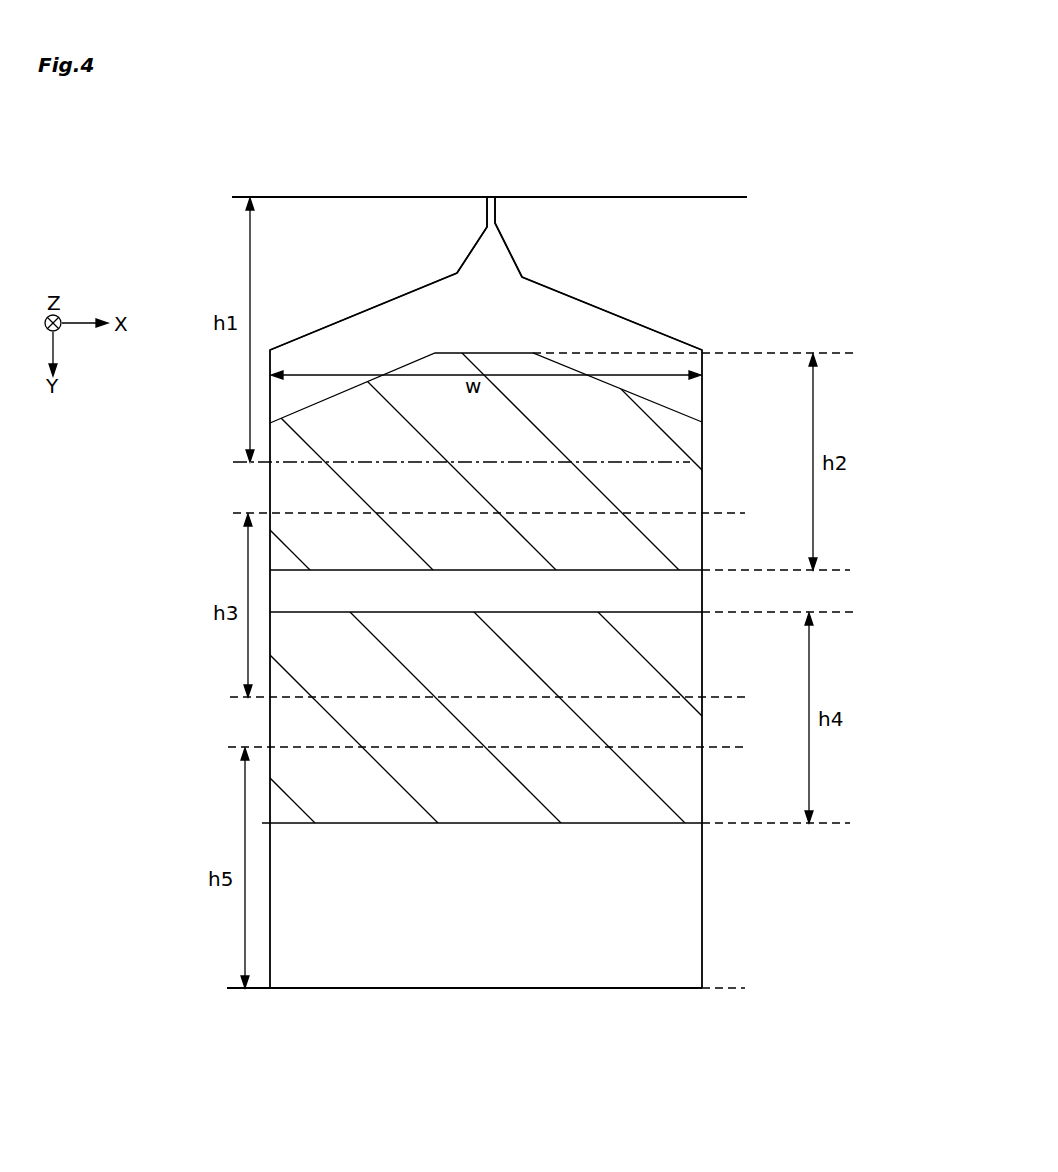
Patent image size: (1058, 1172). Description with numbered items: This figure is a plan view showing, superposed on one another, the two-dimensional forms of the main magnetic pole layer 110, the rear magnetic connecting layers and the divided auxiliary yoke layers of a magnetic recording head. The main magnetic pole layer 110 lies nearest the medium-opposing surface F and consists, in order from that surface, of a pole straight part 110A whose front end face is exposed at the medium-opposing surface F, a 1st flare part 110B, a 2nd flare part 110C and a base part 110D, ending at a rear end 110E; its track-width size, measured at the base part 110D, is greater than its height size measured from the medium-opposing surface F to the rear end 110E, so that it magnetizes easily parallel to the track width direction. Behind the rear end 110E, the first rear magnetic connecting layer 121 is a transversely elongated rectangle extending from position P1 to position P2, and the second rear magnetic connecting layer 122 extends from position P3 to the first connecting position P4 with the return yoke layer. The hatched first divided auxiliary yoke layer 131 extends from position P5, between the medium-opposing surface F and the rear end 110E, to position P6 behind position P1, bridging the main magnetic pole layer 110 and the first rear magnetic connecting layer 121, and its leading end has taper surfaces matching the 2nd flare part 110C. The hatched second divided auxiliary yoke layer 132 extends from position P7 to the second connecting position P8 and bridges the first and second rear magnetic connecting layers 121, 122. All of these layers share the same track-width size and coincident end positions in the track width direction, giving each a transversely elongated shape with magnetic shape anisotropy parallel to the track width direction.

The main magnetic pole layer 110 is at (558, 276).
The pole straight part 110A is at (487, 197).
The 1st flare part 110B is at (478, 252).
The 2nd flare part 110C is at (402, 317).
The base part 110D is at (300, 398).
The rear end 110E is at (300, 464).
The first rear magnetic connecting layer 121 is at (312, 598).
The second rear magnetic connecting layer 122 is at (310, 938).
The first divided auxiliary yoke layer 131 is at (697, 478).
The second divided auxiliary yoke layer 132 is at (688, 772).
The medium-opposing surface F is at (697, 197).
The position P1 is at (509, 514).
The position P2 is at (506, 698).
The position P3 is at (505, 748).
The first connecting position P4 is at (740, 989).
The position P5 is at (711, 354).
The position P6 is at (794, 571).
The position P7 is at (794, 613).
The second connecting position P8 is at (792, 824).